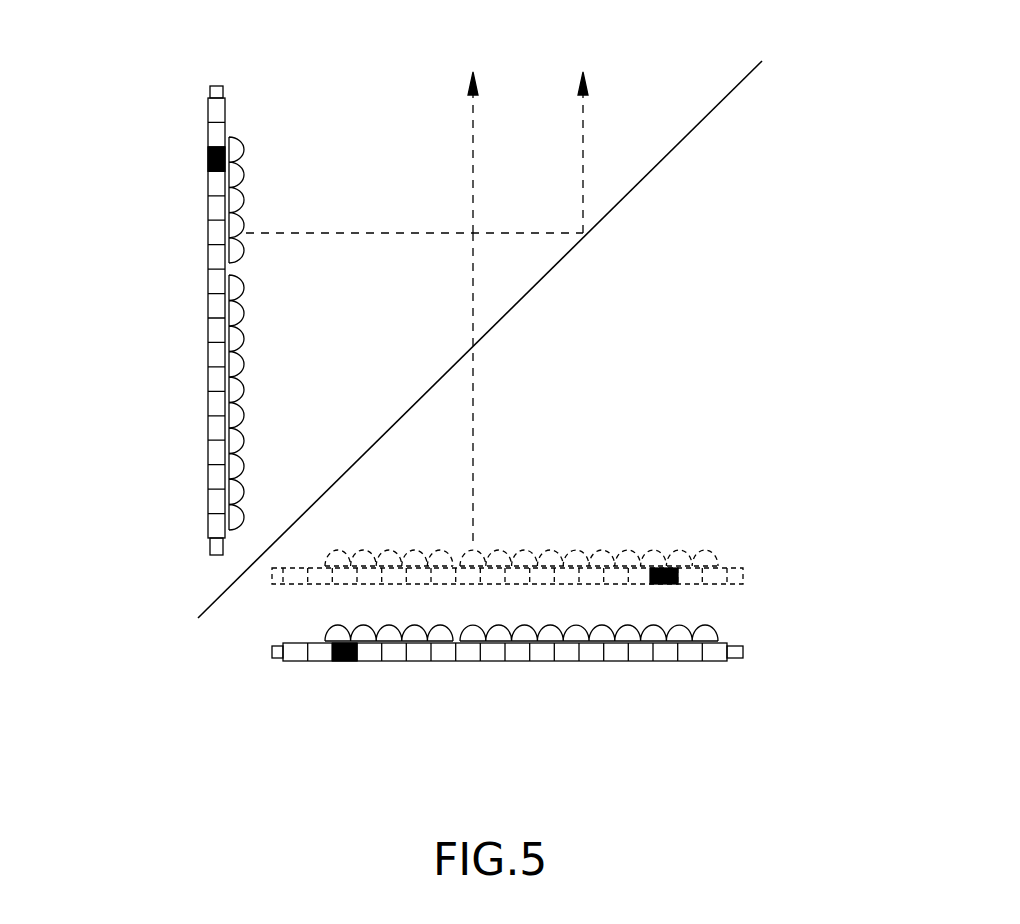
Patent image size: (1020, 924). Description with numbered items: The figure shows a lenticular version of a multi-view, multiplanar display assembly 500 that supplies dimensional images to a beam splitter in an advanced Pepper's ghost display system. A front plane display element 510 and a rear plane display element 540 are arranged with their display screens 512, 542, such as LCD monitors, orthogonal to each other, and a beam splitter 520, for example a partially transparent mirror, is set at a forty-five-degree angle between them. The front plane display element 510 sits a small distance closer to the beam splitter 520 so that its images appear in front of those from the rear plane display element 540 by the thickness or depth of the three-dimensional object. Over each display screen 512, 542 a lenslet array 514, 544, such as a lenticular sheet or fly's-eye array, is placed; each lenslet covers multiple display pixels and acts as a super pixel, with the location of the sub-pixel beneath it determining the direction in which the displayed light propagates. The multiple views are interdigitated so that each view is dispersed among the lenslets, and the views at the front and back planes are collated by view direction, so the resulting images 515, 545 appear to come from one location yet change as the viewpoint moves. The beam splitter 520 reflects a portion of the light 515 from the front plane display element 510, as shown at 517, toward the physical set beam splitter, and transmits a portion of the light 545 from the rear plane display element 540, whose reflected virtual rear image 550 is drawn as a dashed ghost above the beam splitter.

The multi-view, multiplanar display assembly 500 is at (655, 60).
The front plane display element 510 is at (166, 201).
The display screen 512 is at (213, 85).
The lenslet array 514 is at (253, 508).
The light from the front plane display element 515 is at (325, 236).
The reflected light 517 is at (590, 148).
The beam splitter 520 is at (636, 185).
The rear plane display element 540 is at (705, 717).
The display screen 542 is at (283, 661).
The lenslet array 544 is at (737, 628).
The light from the rear plane display element 545 is at (474, 450).
The virtual image of rear display 550 is at (731, 540).